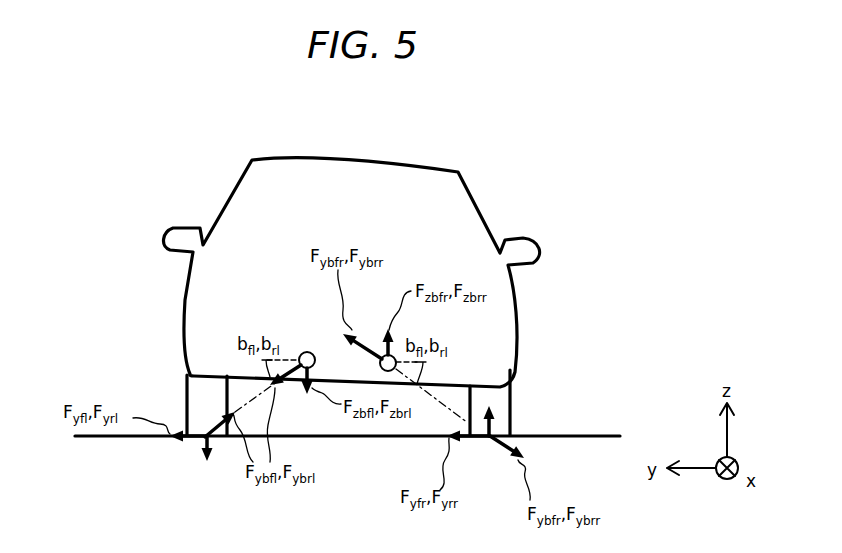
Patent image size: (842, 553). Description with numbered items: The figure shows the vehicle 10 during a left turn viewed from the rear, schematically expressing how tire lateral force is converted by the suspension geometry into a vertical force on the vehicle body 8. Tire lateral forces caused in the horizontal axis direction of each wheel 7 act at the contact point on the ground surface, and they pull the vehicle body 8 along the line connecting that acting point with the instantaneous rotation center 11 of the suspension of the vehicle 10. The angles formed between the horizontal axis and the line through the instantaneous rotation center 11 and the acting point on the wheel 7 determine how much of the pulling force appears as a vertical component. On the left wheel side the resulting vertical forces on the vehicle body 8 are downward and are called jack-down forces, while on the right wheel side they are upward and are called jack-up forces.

The wheel 7 is at (186, 378).
The vehicle body 8 is at (356, 159).
The vehicle 10 is at (508, 185).
The instantaneous rotation center 11 is at (304, 352).